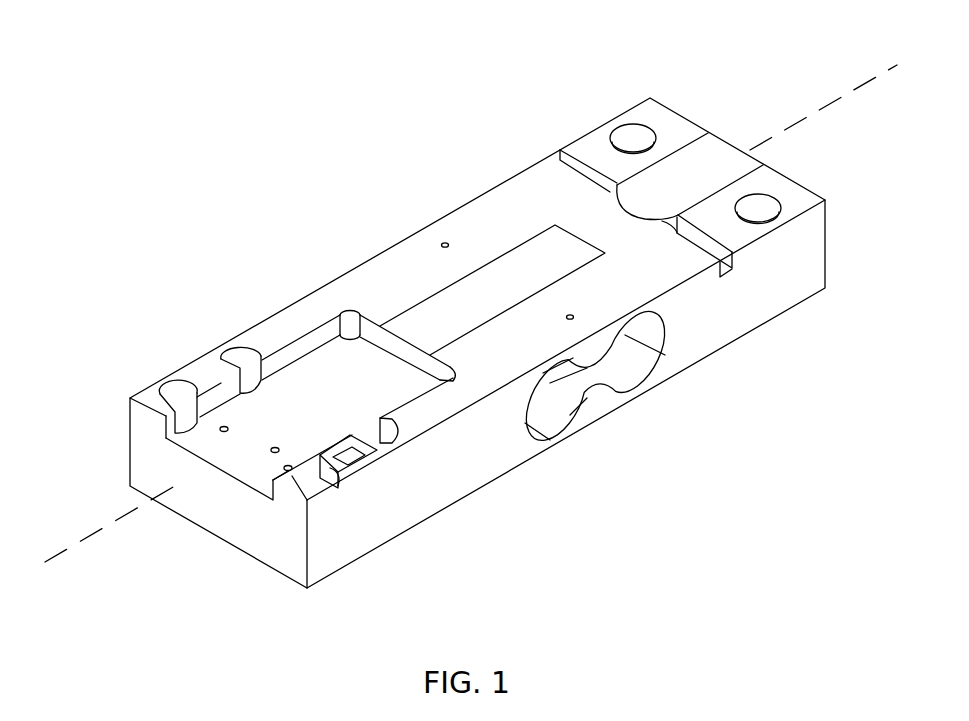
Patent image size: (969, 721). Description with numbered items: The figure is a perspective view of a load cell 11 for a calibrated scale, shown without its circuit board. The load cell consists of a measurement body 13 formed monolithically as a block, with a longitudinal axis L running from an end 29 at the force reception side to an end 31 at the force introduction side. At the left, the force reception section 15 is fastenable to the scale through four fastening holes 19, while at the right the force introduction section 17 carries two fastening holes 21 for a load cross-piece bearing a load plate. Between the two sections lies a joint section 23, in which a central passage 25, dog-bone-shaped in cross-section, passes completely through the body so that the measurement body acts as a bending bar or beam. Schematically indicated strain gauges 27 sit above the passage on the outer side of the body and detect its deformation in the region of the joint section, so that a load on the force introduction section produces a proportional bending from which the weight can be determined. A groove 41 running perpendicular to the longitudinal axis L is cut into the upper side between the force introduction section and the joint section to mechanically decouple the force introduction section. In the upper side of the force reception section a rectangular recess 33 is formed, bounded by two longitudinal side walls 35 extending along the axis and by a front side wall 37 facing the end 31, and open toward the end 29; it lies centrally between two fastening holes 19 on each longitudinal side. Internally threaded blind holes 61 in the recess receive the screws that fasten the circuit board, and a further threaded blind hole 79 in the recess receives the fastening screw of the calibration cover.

The load cell 11 is at (216, 133).
The measurement body 13 is at (375, 270).
The force reception section 15 is at (180, 315).
The force introduction section 17 is at (580, 100).
The fastening holes 19 is at (240, 353).
The fastening holes 21 is at (637, 135).
The joint section 23 is at (428, 197).
The central passage 25 is at (560, 417).
The strain gauges 27 is at (507, 270).
The end at the force reception side 29 is at (158, 542).
The end at the force introduction side 31 is at (765, 110).
The rectangular recess 33 is at (318, 411).
The longitudinal side walls 35 is at (310, 343).
The front side wall 37 is at (432, 383).
The groove 41 is at (727, 280).
The blind holes 61 is at (221, 431).
The blind hole 79 is at (273, 454).
The longitudinal axis L is at (887, 67).